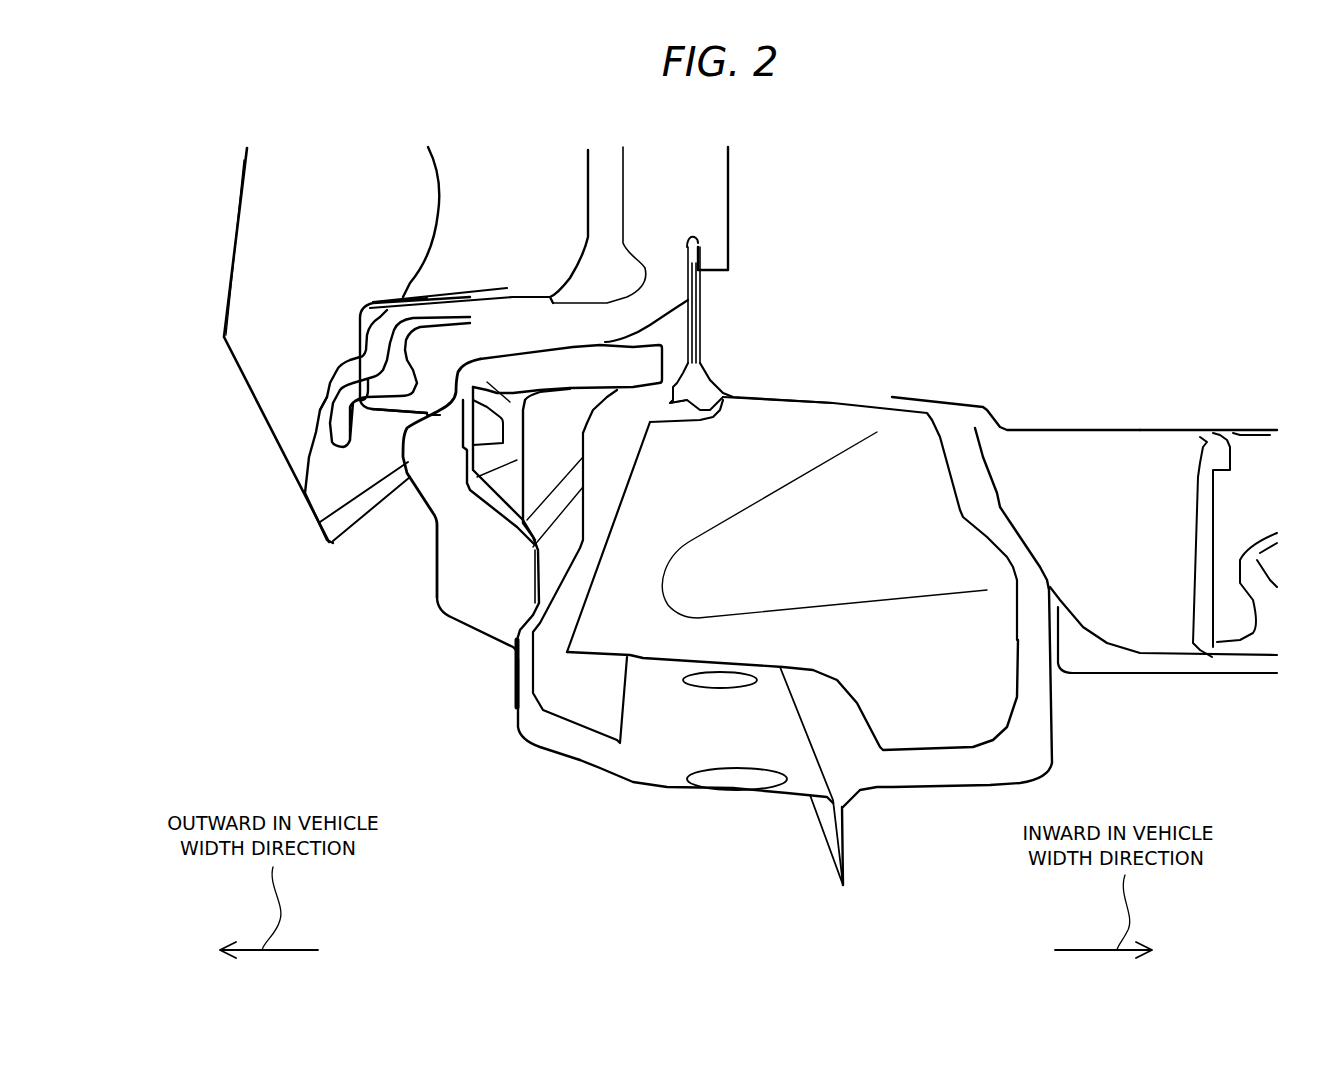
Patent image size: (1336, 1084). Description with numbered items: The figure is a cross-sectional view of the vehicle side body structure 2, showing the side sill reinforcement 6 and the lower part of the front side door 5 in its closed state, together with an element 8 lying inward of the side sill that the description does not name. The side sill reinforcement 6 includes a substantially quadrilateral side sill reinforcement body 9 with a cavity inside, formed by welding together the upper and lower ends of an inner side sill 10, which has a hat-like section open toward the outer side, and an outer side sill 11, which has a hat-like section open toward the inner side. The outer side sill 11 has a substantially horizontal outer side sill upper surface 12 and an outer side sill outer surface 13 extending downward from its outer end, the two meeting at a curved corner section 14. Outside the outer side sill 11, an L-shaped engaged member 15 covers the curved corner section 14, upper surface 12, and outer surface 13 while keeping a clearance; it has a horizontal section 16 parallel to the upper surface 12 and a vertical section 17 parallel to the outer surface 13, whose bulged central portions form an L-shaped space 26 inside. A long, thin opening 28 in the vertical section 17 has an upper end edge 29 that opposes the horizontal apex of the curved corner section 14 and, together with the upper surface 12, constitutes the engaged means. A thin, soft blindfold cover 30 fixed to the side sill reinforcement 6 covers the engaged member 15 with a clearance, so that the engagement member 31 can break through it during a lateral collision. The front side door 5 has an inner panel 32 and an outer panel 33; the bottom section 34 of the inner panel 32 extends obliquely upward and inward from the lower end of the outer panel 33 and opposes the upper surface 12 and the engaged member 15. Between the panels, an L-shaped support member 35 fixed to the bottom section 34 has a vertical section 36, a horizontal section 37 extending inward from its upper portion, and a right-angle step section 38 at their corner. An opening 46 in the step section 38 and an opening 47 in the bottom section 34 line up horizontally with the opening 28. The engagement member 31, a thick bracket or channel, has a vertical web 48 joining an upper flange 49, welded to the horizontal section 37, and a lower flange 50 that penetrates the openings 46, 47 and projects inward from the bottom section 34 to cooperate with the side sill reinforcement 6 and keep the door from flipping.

The vehicle side body structure 2 is at (352, 700).
The front side door 5 is at (235, 215).
The side sill reinforcement 6 is at (595, 770).
The floor cross member 8 is at (1170, 428).
The side sill reinforcement body 9 is at (980, 787).
The inner side sill 10 is at (1060, 735).
The outer side sill 11 is at (513, 712).
The outer side sill upper surface 12 is at (637, 377).
The outer side sill outer surface 13 is at (510, 682).
The curved corner section 14 is at (548, 430).
The engaged member 15 is at (437, 497).
The horizontal section 16 is at (607, 330).
The vertical section 17 is at (410, 463).
The L-shaped space 26 is at (638, 367).
The opening 28 is at (303, 480).
The upper end edge 29 is at (487, 383).
The blindfold cover 30 is at (435, 600).
The engagement member 31 is at (407, 430).
The inner panel 32 is at (627, 188).
The outer panel 33 is at (227, 265).
The bottom section 34 is at (603, 440).
The support member 35 is at (540, 390).
The vertical section 36 is at (358, 403).
The horizontal section 37 is at (487, 297).
The step section 38 is at (373, 347).
The opening 46 is at (358, 385).
The opening 47 is at (313, 407).
The web 48 is at (358, 314).
The upper flange 49 is at (430, 297).
The lower flange 50 is at (410, 417).